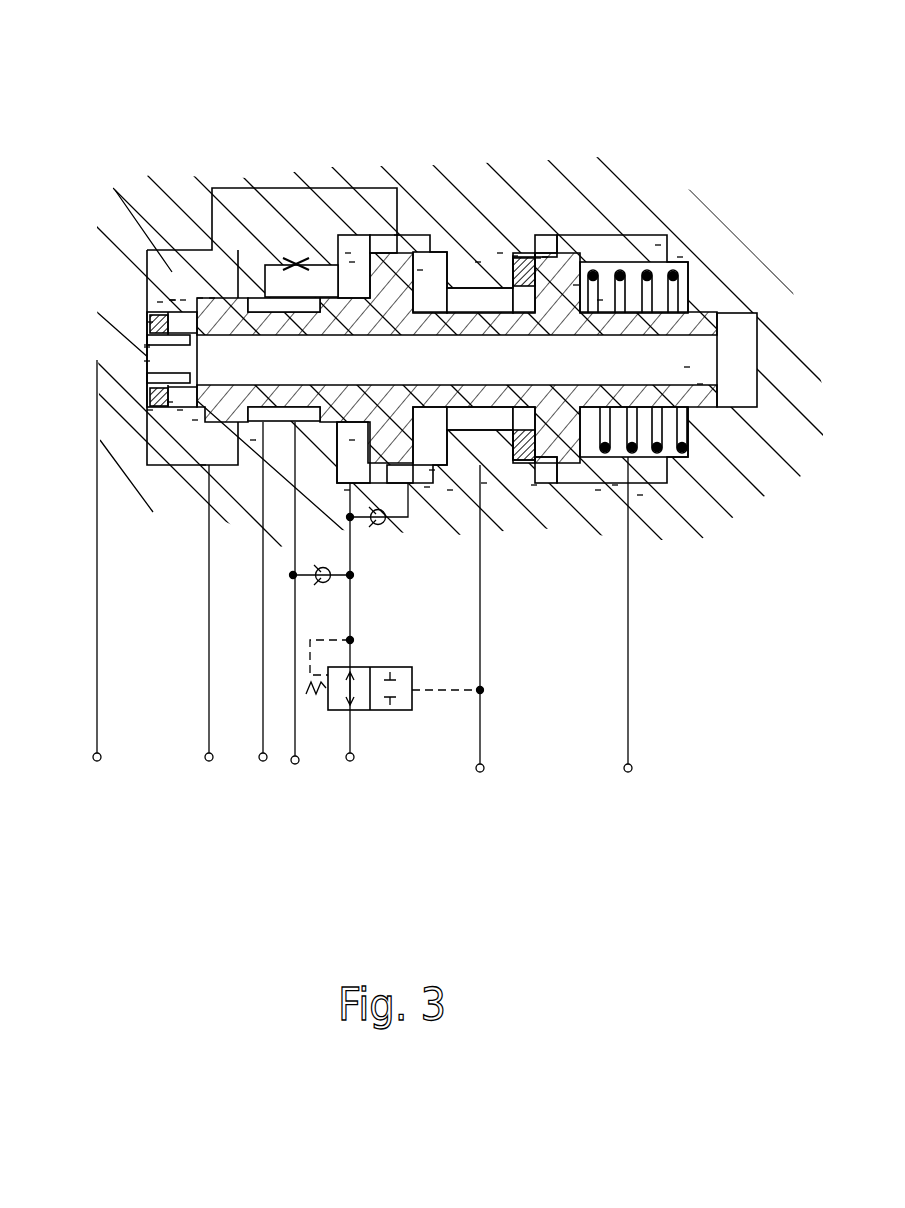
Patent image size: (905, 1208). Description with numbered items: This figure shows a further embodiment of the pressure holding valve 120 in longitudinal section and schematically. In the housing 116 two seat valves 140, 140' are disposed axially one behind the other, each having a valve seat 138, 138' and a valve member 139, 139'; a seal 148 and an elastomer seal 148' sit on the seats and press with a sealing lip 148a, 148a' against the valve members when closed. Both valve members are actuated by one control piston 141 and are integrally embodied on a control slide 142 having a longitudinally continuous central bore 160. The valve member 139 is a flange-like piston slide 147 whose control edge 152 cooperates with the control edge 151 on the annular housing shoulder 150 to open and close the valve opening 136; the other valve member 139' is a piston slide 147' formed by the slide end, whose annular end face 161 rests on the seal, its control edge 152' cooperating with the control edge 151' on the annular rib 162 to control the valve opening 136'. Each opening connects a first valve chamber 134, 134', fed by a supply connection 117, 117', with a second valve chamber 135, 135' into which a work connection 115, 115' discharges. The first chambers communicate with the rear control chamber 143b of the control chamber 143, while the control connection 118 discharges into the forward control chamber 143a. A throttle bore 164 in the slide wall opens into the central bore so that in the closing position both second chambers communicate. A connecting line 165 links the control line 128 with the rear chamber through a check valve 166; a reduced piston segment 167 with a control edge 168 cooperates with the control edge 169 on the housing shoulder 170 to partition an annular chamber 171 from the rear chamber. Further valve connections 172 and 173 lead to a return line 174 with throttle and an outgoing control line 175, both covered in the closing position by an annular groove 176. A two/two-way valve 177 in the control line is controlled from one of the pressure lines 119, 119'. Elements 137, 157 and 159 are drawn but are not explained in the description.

The housing 116 is at (698, 495).
The pressure holding valve 120 is at (504, 104).
The seal 148 is at (542, 281).
The elastomer seal 148' is at (91, 371).
The spring 157 is at (682, 268).
The annular groove 176 is at (282, 298).
The check valve 166 is at (412, 684).
The connecting line 165 is at (353, 640).
The piston segment 167 is at (400, 484).
The control edge 168 is at (416, 484).
The pressure line 119' is at (132, 609).
The return line 174 is at (207, 763).
The outgoing control line 175 is at (262, 763).
The control line 128 is at (297, 765).
The 2/2-way valve 177 is at (376, 713).
The pressure line 119 is at (450, 669).
The work connection 115 is at (700, 608).
The piston slide 147' is at (190, 154).
The control slide 142 is at (200, 298).
The valve opening 136' is at (148, 181).
The first valve chamber 134' is at (126, 192).
The annular rib 162 is at (212, 298).
The forward control chamber 143a is at (352, 262).
The control piston 141 is at (348, 253).
The control chamber 143 is at (397, 228).
The rear control chamber 143b is at (420, 270).
The first valve chamber 134 is at (460, 172).
The bore 137 is at (500, 253).
The valve seat 138 is at (536, 156).
The sealing lip 148a is at (578, 166).
The control edge 152 is at (604, 166).
The annular housing shoulder 150 is at (576, 285).
The control edge 151 is at (665, 191).
The piston slide 147 is at (705, 183).
The second valve chamber 135 is at (737, 198).
The central bore 160 is at (687, 367).
The throttle bore 164 is at (700, 384).
The spring 159 is at (615, 485).
The seat valve 140 is at (533, 570).
The valve member 139 is at (617, 554).
The valve opening 136 is at (576, 550).
The supply connection 117 is at (503, 564).
The annular chamber 171 is at (450, 490).
The housing shoulder 170 is at (427, 487).
The control edge 169 is at (428, 470).
The valve connection 173 is at (350, 485).
The valve connection 172 is at (253, 440).
The control connection 118 is at (347, 490).
The supply connection 117' is at (162, 550).
The control edge 151' is at (148, 500).
The valve member 139' is at (107, 496).
The seat valve 140' is at (97, 461).
The control edge 152' is at (84, 437).
The sealing lip 148a' is at (87, 365).
The work connection 115' is at (87, 335).
The second valve chamber 135' is at (102, 317).
The valve seat 138' is at (91, 241).
The annular end face 161 is at (160, 302).